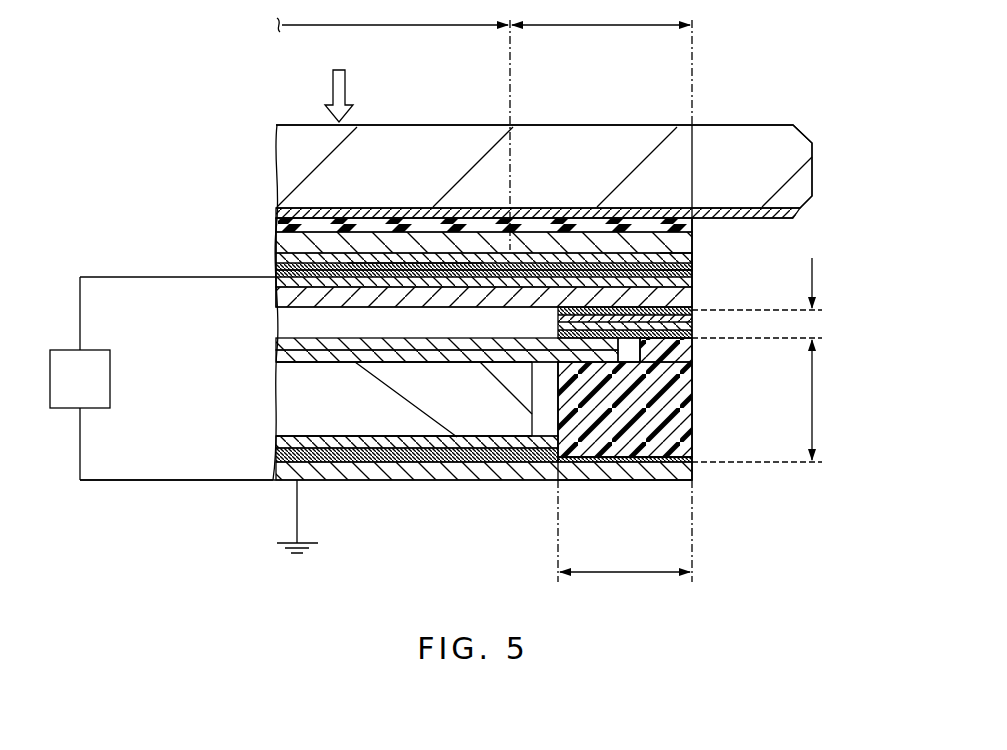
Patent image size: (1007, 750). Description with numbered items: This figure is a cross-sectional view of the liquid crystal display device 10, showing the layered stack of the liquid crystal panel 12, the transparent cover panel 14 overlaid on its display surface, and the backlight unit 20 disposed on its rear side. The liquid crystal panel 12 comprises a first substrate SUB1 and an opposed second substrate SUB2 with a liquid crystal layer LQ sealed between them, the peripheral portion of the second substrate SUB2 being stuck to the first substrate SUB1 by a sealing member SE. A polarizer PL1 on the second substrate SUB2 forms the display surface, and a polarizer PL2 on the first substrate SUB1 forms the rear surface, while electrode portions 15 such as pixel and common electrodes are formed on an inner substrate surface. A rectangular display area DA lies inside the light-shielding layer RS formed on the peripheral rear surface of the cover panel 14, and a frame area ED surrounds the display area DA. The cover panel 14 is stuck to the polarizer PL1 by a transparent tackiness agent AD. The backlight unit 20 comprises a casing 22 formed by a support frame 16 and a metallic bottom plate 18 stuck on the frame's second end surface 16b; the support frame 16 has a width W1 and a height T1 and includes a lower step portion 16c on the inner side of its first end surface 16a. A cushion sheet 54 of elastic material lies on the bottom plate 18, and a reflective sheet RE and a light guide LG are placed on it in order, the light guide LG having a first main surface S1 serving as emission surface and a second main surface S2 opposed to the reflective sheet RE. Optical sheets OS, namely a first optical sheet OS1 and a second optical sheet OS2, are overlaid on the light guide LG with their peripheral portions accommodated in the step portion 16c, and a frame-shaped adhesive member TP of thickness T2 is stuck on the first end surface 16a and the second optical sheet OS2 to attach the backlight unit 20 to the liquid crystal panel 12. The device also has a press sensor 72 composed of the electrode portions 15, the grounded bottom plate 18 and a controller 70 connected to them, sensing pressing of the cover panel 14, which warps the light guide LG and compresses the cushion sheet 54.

The liquid crystal display device 10 is at (771, 112).
The liquid crystal panel 12 is at (533, 216).
The cover panel 14 is at (304, 130).
The electrode portions 15 is at (482, 262).
The support frame 16 is at (669, 449).
The first end surface 16a is at (692, 358).
The second end surface 16b is at (627, 470).
The step portion 16c is at (692, 402).
The bottom plate 18 is at (692, 479).
The backlight unit 20 is at (360, 490).
The casing 22 is at (787, 558).
The cushion sheet 54 is at (500, 464).
The controller 70 is at (100, 350).
The press sensor 72 is at (155, 484).
The tackiness agent AD is at (274, 206).
The polarizer PL1 is at (276, 224).
The second substrate SUB2 is at (276, 243).
The liquid crystal layer LQ is at (276, 266).
The sealing member SE is at (692, 268).
The first substrate SUB1 is at (276, 287).
The polarizer PL2 is at (276, 300).
The adhesive member TP is at (694, 327).
The optical sheets OS is at (379, 366).
The second optical sheet OS2 is at (276, 340).
The first optical sheet OS1 is at (276, 352).
The first main surface S1 is at (274, 390).
The second main surface S2 is at (280, 423).
The light guide LG is at (453, 432).
The reflective sheet RE is at (398, 445).
The light-shielding layer RS is at (765, 220).
The display area DA is at (393, 127).
The frame area ED is at (602, 64).
The height of support frame T1 is at (767, 401).
The thickness of adhesive member T2 is at (766, 298).
The width of support frame W1 is at (625, 541).